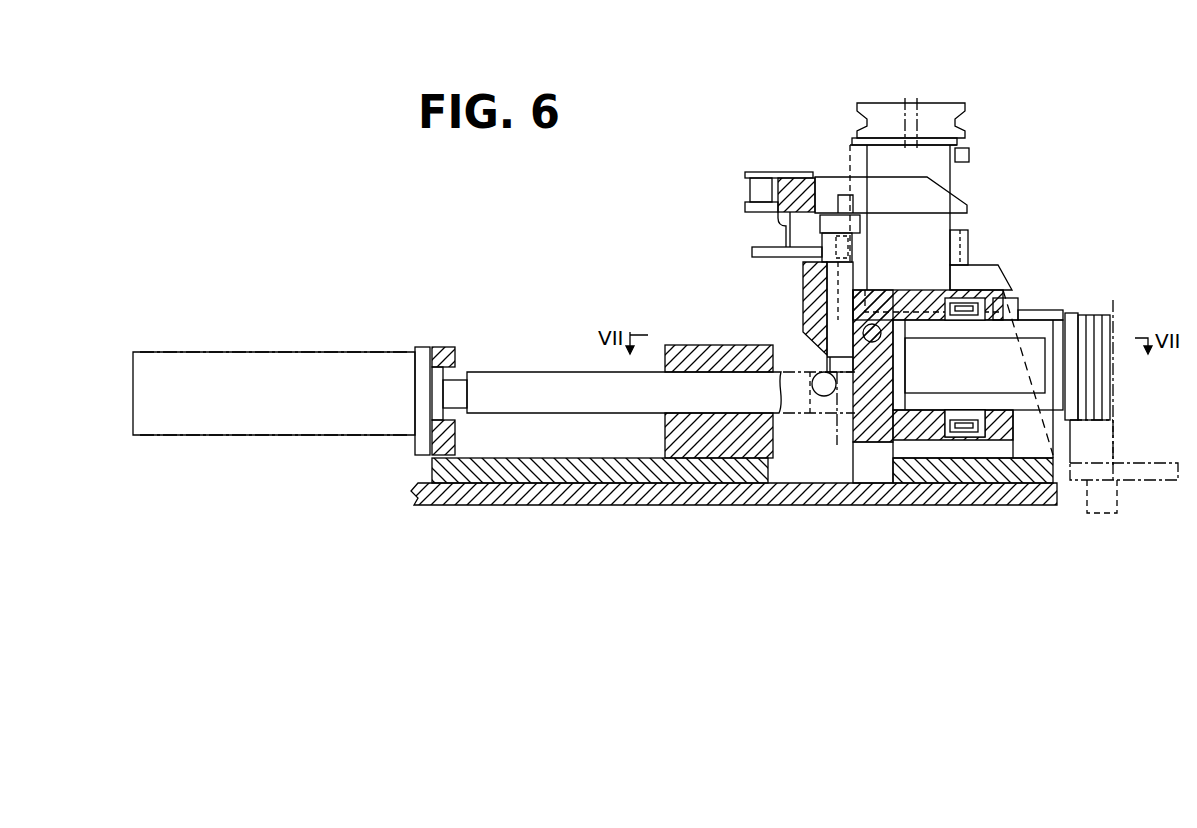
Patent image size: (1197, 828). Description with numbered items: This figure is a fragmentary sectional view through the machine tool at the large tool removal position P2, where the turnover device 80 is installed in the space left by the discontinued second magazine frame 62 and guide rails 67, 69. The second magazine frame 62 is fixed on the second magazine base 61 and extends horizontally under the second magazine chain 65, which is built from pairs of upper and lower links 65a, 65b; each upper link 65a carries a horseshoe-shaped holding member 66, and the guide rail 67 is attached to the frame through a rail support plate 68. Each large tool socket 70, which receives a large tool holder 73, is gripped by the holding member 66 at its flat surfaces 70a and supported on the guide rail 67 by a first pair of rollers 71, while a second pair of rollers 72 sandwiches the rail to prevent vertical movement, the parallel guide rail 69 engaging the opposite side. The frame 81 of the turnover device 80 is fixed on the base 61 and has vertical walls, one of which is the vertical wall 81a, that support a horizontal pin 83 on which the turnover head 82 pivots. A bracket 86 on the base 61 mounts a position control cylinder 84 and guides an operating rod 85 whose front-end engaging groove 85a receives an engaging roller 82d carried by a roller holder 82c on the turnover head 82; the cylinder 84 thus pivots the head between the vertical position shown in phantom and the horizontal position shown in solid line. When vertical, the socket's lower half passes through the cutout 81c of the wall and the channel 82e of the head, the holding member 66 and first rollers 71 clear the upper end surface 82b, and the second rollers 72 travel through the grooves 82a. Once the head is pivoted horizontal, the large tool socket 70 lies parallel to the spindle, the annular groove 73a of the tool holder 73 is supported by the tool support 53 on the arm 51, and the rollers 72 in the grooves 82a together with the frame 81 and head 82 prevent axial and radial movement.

The large tool removal position P2 is at (910, 97).
The arm 51 is at (1150, 465).
The tool support 53 is at (1108, 438).
The second magazine base 61 is at (548, 495).
The second magazine frame 62 is at (762, 257).
The second magazine chain 65 is at (755, 172).
The upper link 65a is at (800, 178).
The lower link 65b is at (775, 232).
The holding member 66 is at (832, 183).
The guide rail 67 is at (855, 226).
The rail support plate 68 is at (822, 262).
The guide rail 69 is at (969, 155).
The large tool socket 70 is at (1027, 400).
The flat surfaces 70a is at (1026, 412).
The first pair of rollers 71 is at (1022, 310).
The second pair of rollers 72 is at (975, 420).
The large tool holder 73 is at (1078, 316).
The annular groove 73a is at (1094, 344).
The turnover device 80 is at (1028, 243).
The frame 81 is at (910, 468).
The vertical wall 81a is at (980, 270).
The cutout 81c is at (865, 292).
The turnover head 82 is at (920, 290).
The grooves 82a is at (968, 318).
The upper end surface 82b is at (1008, 300).
The roller holder 82c is at (832, 366).
The engaging roller 82d is at (822, 398).
The channel 82e is at (905, 418).
The pin 83 is at (862, 335).
The position control cylinder 84 is at (337, 352).
The operating rod 85 is at (566, 382).
The engaging groove 85a is at (835, 418).
The bracket 86 is at (548, 470).